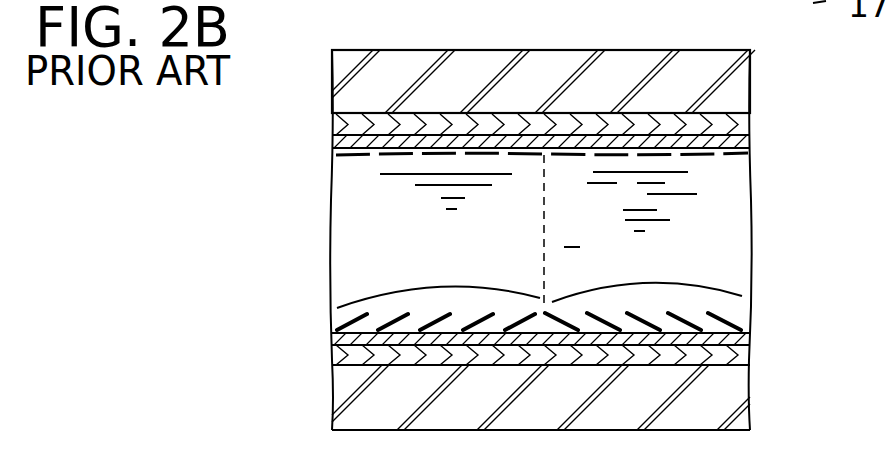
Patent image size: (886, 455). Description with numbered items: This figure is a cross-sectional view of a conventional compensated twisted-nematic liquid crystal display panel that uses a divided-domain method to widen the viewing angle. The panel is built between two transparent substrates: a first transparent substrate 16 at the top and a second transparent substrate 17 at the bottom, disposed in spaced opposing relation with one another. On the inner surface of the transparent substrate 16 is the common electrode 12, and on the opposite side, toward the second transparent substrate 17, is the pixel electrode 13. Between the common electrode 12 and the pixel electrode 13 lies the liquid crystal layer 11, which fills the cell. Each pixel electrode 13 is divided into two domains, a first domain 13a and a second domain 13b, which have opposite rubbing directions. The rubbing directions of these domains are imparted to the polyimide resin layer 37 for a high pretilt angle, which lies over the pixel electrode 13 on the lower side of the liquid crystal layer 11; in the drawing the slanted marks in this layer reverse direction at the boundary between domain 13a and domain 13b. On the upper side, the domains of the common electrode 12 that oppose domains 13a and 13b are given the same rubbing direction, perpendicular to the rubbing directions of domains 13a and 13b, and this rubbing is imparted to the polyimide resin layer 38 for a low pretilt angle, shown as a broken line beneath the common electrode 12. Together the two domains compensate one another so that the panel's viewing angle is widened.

The transparent substrate 16 is at (332, 78).
The common electrode 12 is at (332, 127).
The polyimide resin layer 38 is at (332, 145).
The liquid crystal layer 11 is at (745, 182).
The domain 13a is at (413, 288).
The domain 13b is at (687, 283).
The polyimide resin layer 37 is at (333, 335).
The pixel electrode 13 is at (333, 352).
The second transparent substrate 17 is at (333, 395).